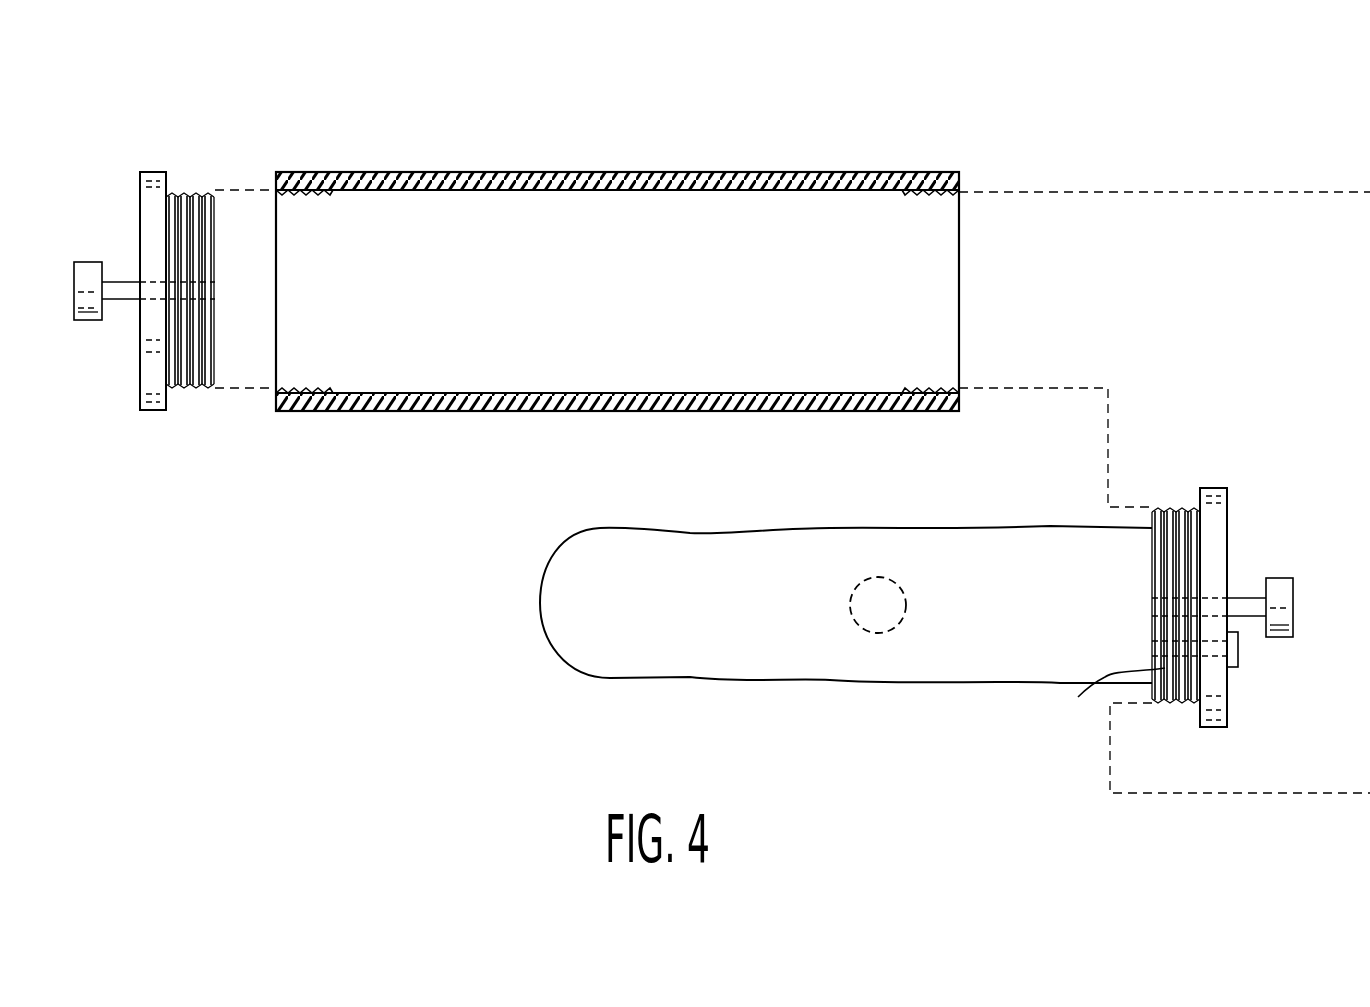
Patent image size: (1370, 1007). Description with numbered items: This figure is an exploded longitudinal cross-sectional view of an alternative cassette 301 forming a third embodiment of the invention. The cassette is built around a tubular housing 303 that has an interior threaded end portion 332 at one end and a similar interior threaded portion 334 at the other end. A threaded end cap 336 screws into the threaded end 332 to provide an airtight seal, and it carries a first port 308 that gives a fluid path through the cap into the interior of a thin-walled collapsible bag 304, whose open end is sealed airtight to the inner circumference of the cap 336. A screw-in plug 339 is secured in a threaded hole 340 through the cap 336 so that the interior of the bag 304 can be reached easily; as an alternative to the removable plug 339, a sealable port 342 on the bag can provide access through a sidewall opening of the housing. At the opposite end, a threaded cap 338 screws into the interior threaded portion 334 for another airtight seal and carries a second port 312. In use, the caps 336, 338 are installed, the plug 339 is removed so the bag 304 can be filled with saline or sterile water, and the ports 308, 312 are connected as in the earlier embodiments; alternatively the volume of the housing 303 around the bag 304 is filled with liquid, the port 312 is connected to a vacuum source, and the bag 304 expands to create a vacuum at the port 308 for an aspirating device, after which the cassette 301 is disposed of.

The alternative cassette 301 is at (1160, 67).
The housing 303 is at (617, 260).
The thin-walled collapsible bag 304 is at (852, 600).
The first port 308 is at (1280, 578).
The second port 312 is at (92, 323).
The interior threaded end portion 332 is at (915, 194).
The interior threaded portion 334 is at (306, 194).
The threaded end cap 336 is at (1213, 486).
The threaded cap 338 is at (153, 172).
The screw-in plug 339 is at (1238, 650).
The threaded hole 340 is at (1111, 699).
The sealable port 342 is at (904, 618).